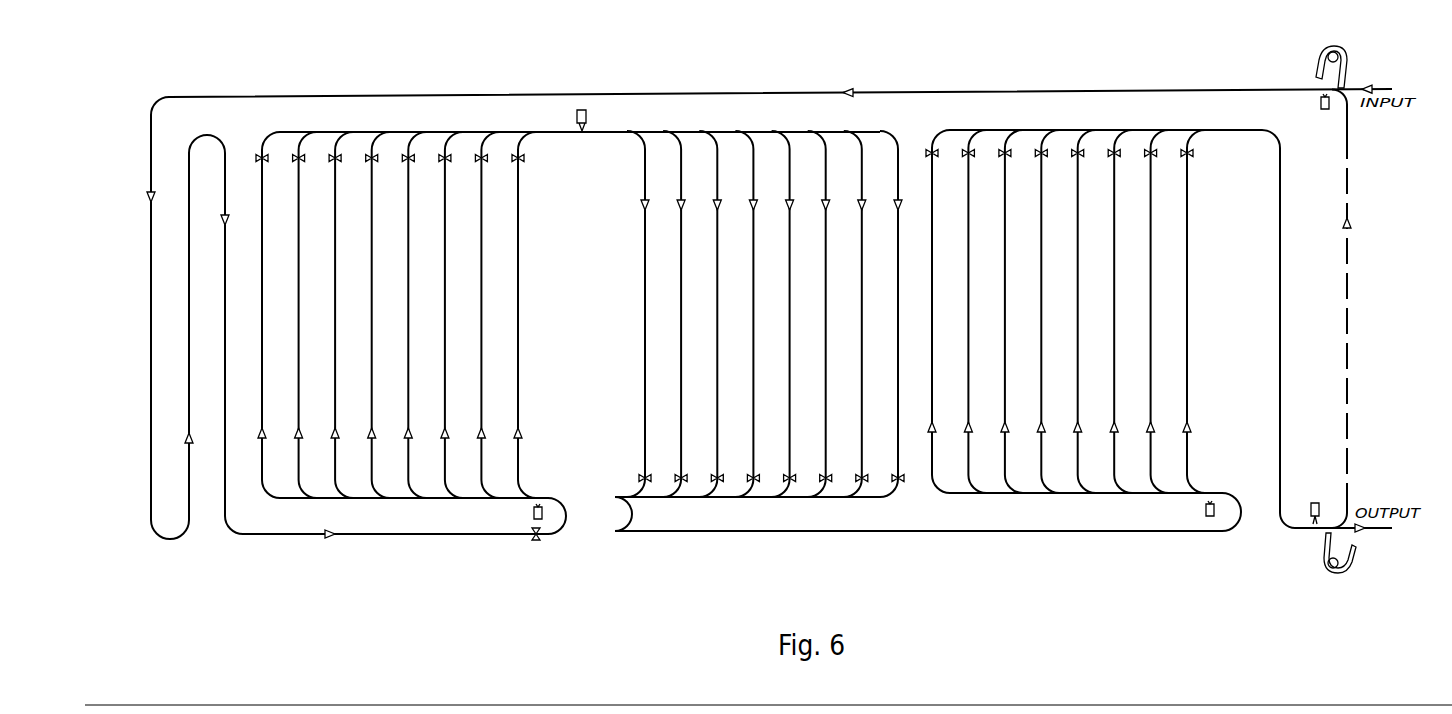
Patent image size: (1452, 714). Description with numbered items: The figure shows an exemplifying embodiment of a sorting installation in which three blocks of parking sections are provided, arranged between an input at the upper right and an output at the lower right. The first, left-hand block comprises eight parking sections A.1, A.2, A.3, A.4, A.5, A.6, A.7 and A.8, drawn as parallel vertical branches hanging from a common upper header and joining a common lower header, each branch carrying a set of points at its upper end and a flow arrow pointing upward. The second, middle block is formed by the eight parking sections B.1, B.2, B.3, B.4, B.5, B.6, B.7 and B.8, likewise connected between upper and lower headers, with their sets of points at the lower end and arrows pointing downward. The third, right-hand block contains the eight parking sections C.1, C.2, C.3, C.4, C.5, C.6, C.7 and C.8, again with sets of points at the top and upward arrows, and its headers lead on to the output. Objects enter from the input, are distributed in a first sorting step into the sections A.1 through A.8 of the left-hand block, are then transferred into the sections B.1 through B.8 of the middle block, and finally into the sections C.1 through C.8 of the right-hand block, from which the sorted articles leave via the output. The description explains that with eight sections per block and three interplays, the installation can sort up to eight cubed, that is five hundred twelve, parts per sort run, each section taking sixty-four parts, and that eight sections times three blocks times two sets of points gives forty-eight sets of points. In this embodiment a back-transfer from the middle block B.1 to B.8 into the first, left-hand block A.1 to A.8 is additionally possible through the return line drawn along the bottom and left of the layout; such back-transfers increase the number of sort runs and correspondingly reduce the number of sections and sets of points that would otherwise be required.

The heat exchange tube A.1 is at (528, 315).
The heat exchange tube A.2 is at (491, 315).
The heat exchange tube A.3 is at (455, 315).
The heat exchange tube A.4 is at (418, 315).
The heat exchange tube A.5 is at (382, 315).
The heat exchange tube A.6 is at (345, 315).
The heat exchange tube A.7 is at (309, 315).
The heat exchange tube A.8 is at (272, 315).
The heat exchange tube B.1 is at (637, 314).
The heat exchange tube B.2 is at (671, 314).
The heat exchange tube B.3 is at (707, 314).
The heat exchange tube B.4 is at (742, 314).
The heat exchange tube B.5 is at (781, 314).
The heat exchange tube B.6 is at (814, 314).
The heat exchange tube B.7 is at (850, 314).
The heat exchange tube B.8 is at (885, 314).
The heat exchange tube C.1 is at (1196, 311).
The heat exchange tube C.2 is at (1160, 311).
The heat exchange tube C.3 is at (1123, 311).
The heat exchange tube C.4 is at (1087, 311).
The heat exchange tube C.5 is at (1050, 311).
The heat exchange tube C.6 is at (1014, 311).
The heat exchange tube C.7 is at (977, 311).
The heat exchange tube C.8 is at (941, 311).